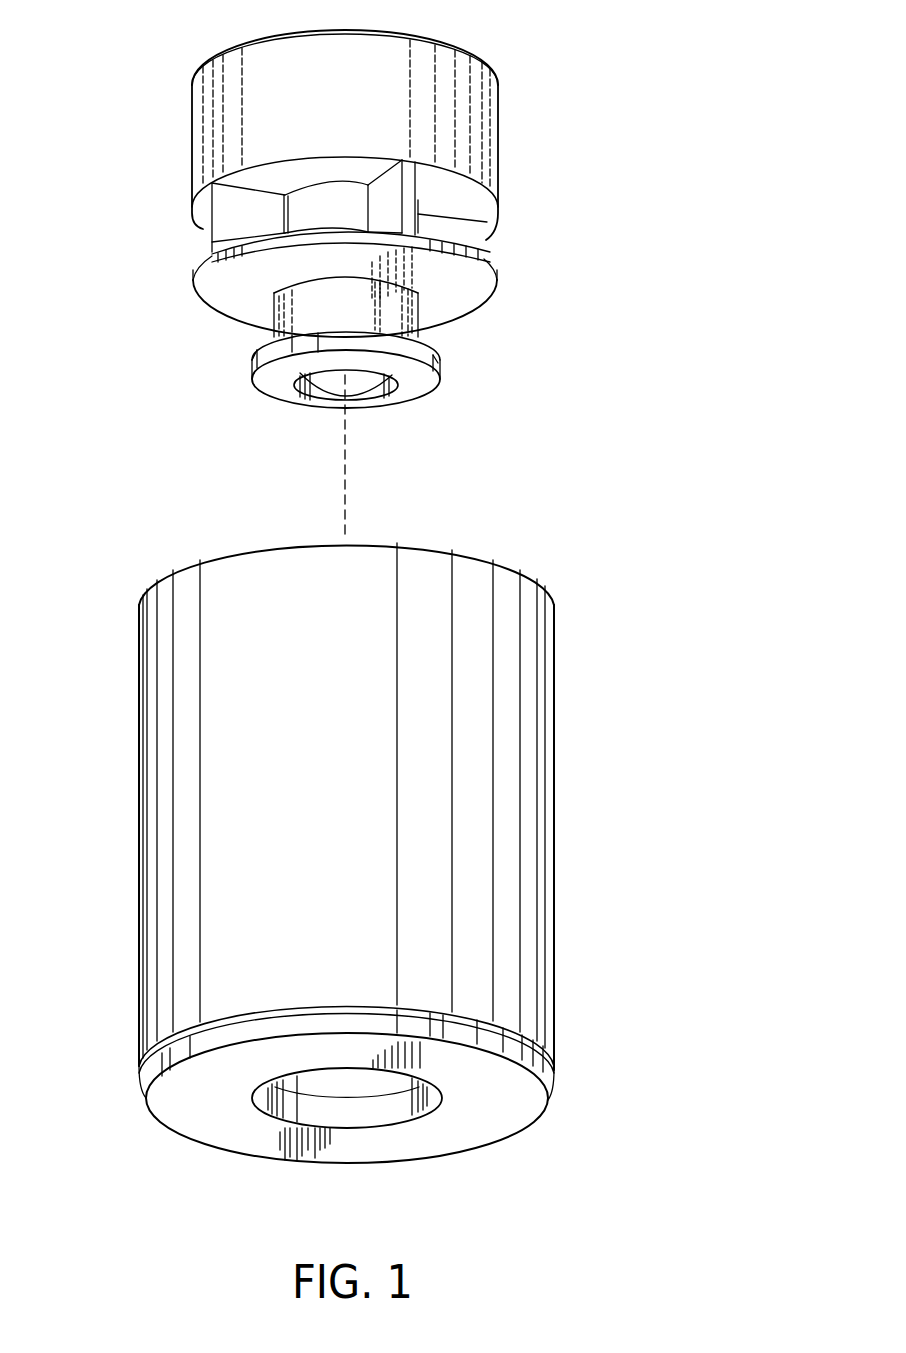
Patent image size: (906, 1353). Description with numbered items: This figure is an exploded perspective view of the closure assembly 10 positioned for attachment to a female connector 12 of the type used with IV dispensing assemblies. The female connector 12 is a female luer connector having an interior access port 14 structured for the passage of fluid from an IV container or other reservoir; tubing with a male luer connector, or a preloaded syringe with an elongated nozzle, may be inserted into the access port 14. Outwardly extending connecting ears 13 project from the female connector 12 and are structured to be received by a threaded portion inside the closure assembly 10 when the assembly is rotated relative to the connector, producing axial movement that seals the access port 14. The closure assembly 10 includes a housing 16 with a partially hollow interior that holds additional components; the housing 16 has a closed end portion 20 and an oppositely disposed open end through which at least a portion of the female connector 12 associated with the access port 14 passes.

The closure assembly 10 is at (617, 626).
The female connector 12 is at (568, 188).
The connecting ears 13 is at (258, 357).
The access port 14 is at (323, 392).
The housing 16 is at (527, 857).
The closed end portion 20 is at (520, 1112).